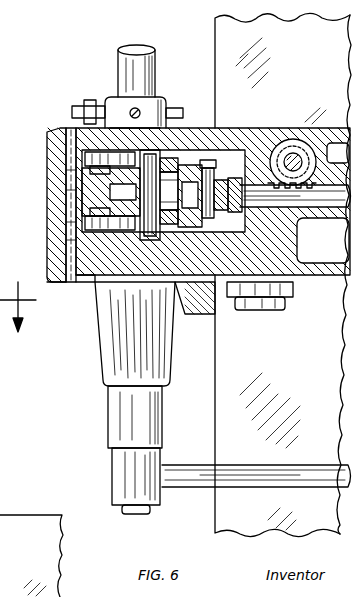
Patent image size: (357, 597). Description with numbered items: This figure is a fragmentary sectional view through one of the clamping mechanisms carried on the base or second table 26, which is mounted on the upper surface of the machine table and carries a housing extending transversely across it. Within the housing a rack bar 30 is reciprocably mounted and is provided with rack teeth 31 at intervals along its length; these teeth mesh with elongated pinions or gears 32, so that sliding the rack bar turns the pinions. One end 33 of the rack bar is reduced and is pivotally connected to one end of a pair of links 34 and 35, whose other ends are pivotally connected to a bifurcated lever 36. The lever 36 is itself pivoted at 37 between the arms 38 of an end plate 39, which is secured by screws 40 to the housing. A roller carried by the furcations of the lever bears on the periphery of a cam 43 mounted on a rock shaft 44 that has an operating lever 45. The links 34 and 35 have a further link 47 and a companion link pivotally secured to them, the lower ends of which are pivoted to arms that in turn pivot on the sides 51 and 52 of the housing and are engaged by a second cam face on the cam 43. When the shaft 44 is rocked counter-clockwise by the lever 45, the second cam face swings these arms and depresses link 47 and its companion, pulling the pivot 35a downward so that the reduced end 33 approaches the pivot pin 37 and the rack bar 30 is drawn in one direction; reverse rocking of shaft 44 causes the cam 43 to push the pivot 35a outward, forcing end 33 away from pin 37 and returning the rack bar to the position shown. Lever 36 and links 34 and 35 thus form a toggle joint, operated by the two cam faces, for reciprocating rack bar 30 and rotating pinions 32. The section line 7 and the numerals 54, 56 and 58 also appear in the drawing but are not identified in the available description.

The section line 7- 7 is at (18, 301).
The second table 26 is at (233, 372).
The rack bar 30 is at (321, 205).
The rack teeth 31 is at (323, 128).
The pinions 32 is at (295, 140).
The reduced end of rack bar 33 is at (184, 302).
The link 34 is at (187, 126).
The link 35 is at (158, 273).
The pivot 35a is at (148, 127).
The bifurcated lever 36 is at (63, 180).
The pivot pin 37 is at (72, 207).
The arms of end plate 38 is at (80, 230).
The end plate 39 is at (58, 278).
The screws 40 is at (56, 140).
The cam 43 is at (172, 278).
The rock shaft 44 is at (134, 64).
The operating lever 45 is at (288, 478).
The link 47 is at (163, 195).
The side of housing 51 is at (121, 134).
The side of housing 52 is at (92, 282).
The panel 54 is at (31, 556).
The panel 56 is at (0, 553).
The panel 58 is at (0, 530).